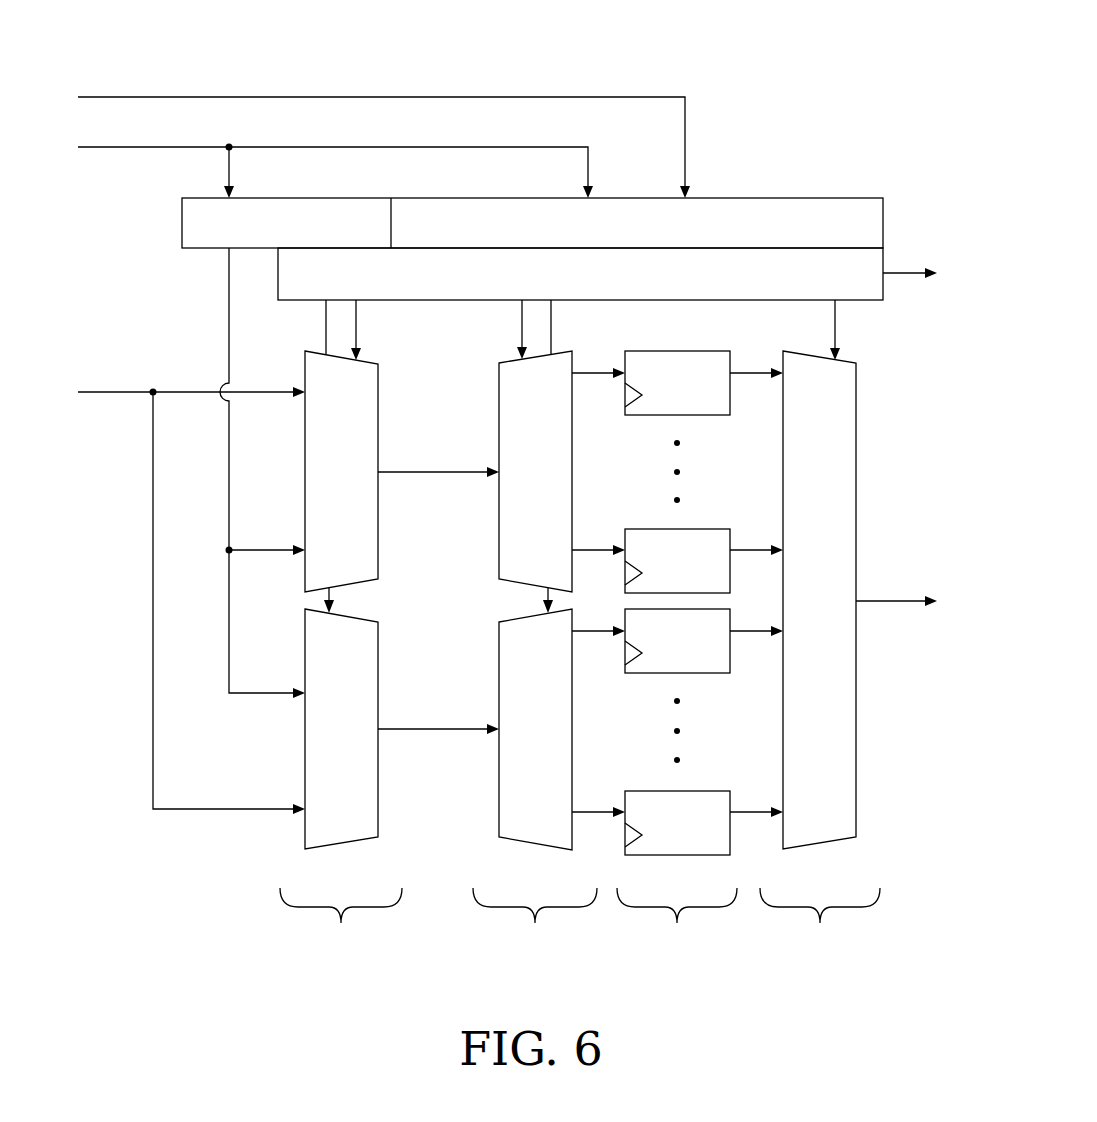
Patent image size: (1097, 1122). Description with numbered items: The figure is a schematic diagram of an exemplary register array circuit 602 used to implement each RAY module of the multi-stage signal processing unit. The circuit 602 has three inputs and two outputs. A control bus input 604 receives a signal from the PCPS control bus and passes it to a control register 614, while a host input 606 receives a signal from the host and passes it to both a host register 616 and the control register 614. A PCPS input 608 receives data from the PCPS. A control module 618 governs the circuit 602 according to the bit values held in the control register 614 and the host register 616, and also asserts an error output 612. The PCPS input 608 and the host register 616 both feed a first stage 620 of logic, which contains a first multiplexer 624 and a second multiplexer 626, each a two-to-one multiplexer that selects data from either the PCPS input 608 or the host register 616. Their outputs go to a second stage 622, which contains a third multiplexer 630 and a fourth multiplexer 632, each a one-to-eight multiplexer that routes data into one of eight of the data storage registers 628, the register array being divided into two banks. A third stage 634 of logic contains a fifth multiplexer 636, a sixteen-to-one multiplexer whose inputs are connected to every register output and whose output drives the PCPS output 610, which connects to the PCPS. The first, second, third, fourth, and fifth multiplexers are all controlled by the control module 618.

The circuit 602 is at (772, 92).
The control bus input 604 is at (123, 96).
The host input 606 is at (122, 148).
The PCPS input 608 is at (123, 392).
The PCPS output 610 is at (915, 602).
The error output 612 is at (915, 276).
The control register 614 is at (771, 212).
The host register 616 is at (212, 235).
The control module 618 is at (484, 284).
The first stage 620 is at (341, 924).
The second stage 622 is at (535, 924).
The first multiplexer 624 is at (370, 530).
The second multiplexer 626 is at (370, 790).
The data storage registers 628 is at (677, 656).
The third multiplexer 630 is at (508, 410).
The fourth multiplexer 632 is at (508, 668).
The third stage 634 is at (820, 924).
The fifth multiplexer 636 is at (846, 532).